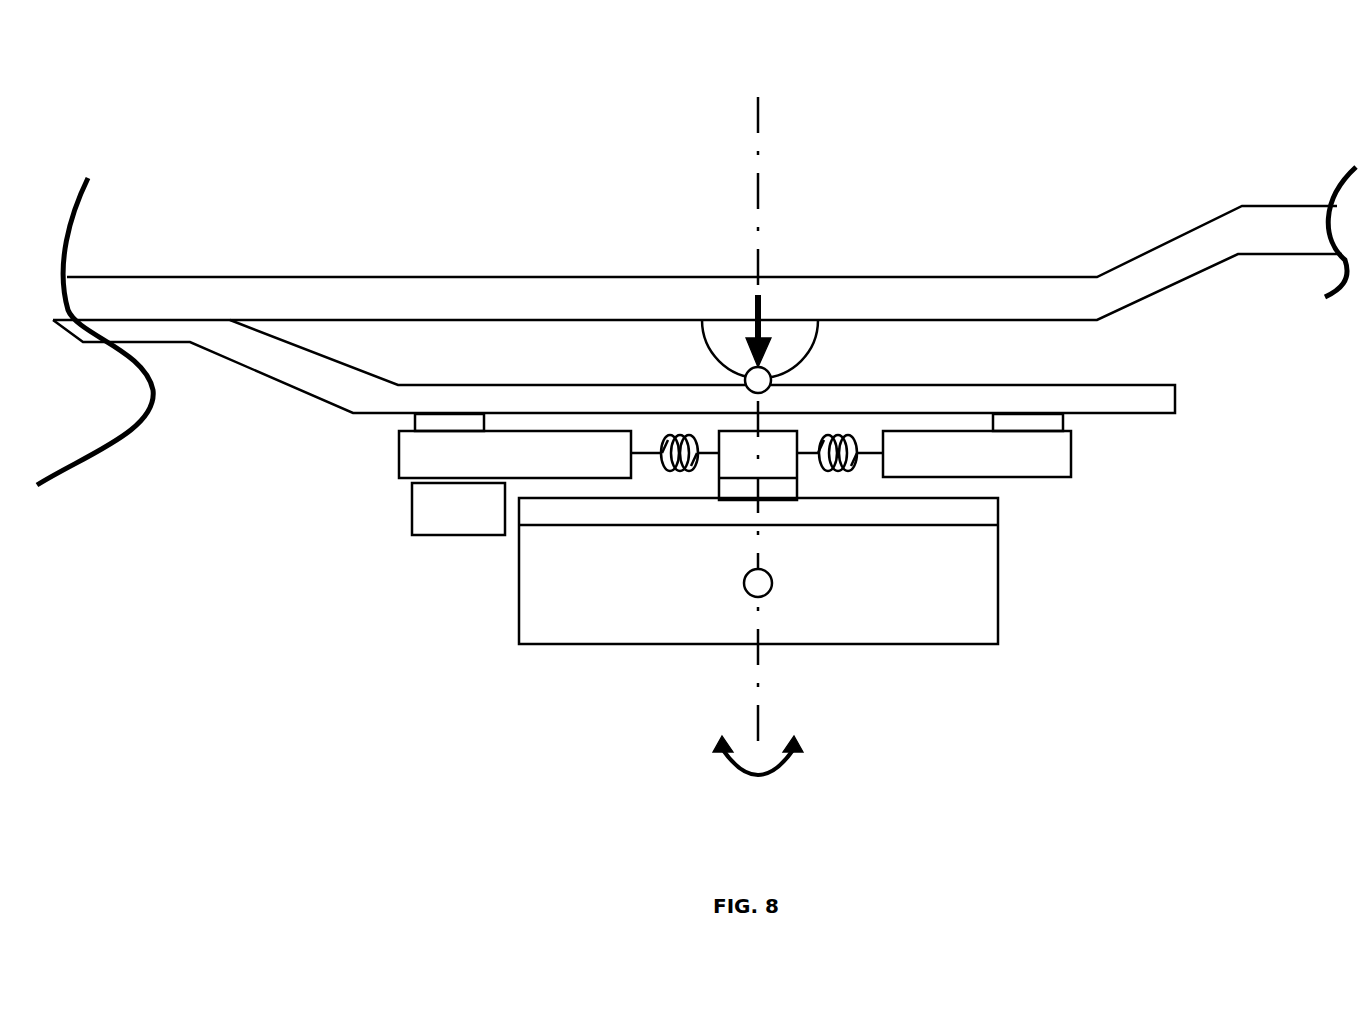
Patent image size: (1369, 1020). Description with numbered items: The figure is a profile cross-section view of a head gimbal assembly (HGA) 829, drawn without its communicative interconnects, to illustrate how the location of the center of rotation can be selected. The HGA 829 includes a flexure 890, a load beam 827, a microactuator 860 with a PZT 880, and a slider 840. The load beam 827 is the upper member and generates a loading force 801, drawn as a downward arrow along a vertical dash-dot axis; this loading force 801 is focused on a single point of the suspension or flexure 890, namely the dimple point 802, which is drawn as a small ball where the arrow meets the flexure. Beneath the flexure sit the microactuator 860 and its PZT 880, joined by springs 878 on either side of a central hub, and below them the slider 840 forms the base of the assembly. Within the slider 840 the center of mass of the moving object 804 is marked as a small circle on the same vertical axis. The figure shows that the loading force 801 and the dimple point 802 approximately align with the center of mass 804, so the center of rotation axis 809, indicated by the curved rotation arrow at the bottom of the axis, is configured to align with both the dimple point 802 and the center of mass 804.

The head gimbal assembly (HGA) 829 is at (1045, 53).
The load beam 827 is at (407, 297).
The flexure 890 is at (275, 358).
The loading force 801 is at (758, 298).
The dimple point 802 is at (772, 370).
The microactuator 860 is at (423, 445).
The spring 878 is at (663, 437).
The PZT 880 is at (440, 515).
The slider 840 is at (977, 568).
The center of mass of moving object 804 is at (772, 585).
The axis center of rotation 809 is at (763, 728).